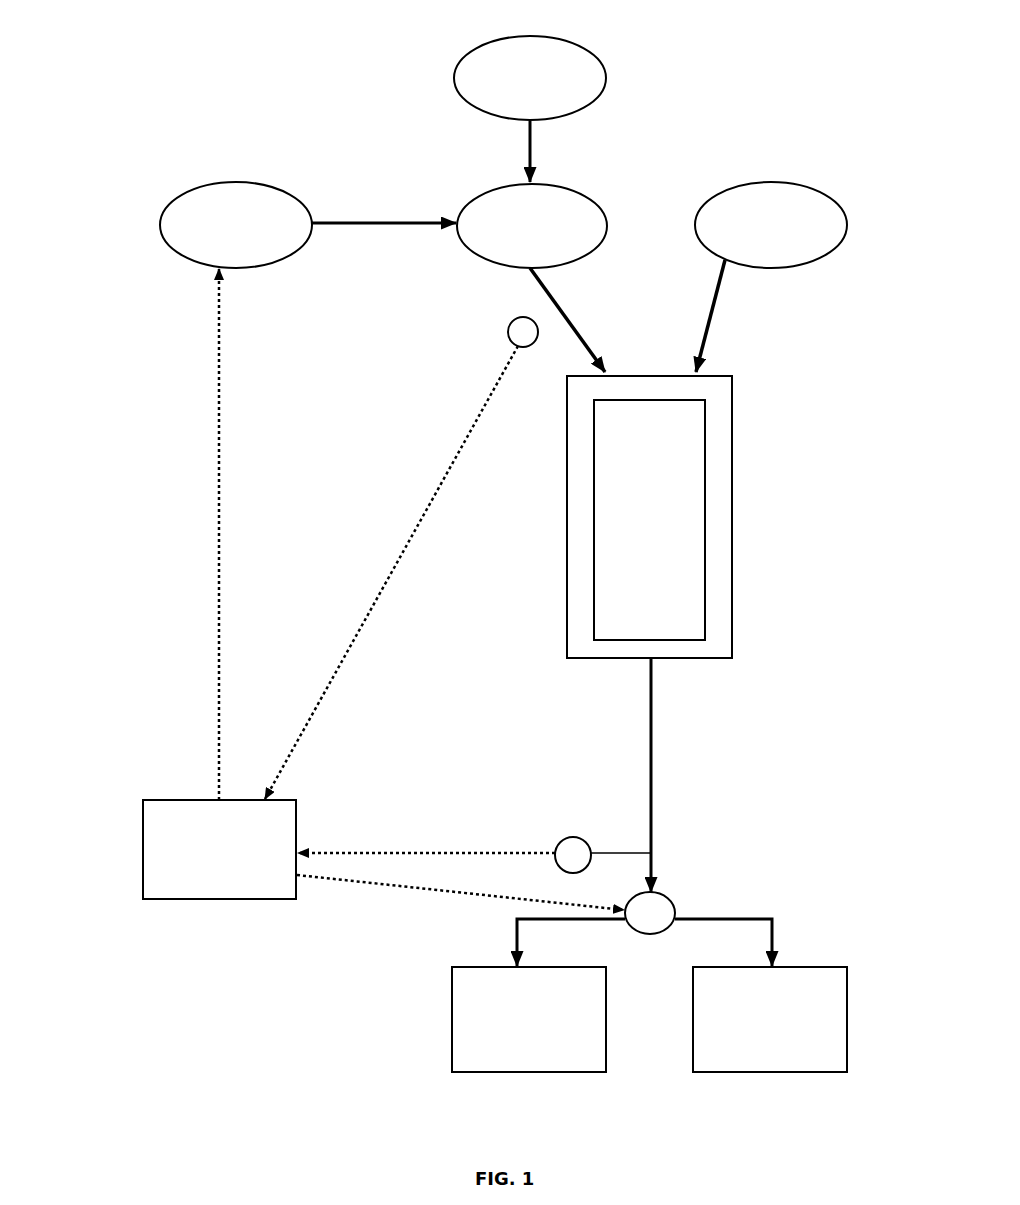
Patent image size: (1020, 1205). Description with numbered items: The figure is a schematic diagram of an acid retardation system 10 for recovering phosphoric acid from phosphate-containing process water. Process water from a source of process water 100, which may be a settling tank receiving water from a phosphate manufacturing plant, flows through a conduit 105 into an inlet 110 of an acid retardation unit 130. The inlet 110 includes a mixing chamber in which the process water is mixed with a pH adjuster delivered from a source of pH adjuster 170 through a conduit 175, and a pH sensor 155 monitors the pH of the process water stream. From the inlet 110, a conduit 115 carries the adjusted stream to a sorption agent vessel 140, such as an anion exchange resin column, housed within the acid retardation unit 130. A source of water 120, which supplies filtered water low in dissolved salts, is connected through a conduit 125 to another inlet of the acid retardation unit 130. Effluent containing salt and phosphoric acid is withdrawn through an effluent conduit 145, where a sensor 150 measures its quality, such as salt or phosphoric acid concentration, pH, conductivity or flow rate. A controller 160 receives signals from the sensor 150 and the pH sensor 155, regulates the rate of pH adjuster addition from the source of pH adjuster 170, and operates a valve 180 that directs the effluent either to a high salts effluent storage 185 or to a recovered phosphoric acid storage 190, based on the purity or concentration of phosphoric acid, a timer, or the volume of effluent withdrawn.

The acid retardation system 10 is at (150, 141).
The source of process water 100 is at (530, 78).
The conduit 105 is at (534, 147).
The inlet 110 is at (532, 226).
The conduit 115 is at (568, 304).
The source of water 120 is at (771, 225).
The conduit 125 is at (722, 292).
The acid retardation unit 130 is at (734, 425).
The sorption agent vessel 140 is at (668, 607).
The effluent conduit 145 is at (654, 753).
The sensor 150 is at (551, 827).
The pH sensor 155 is at (506, 330).
The controller 160 is at (383, 589).
The source of pH adjuster 170 is at (236, 225).
The conduit 175 is at (353, 221).
The valve 180 is at (669, 894).
The high salts effluent storage 185 is at (529, 1019).
The recovered phosphoric acid storage 190 is at (770, 1019).